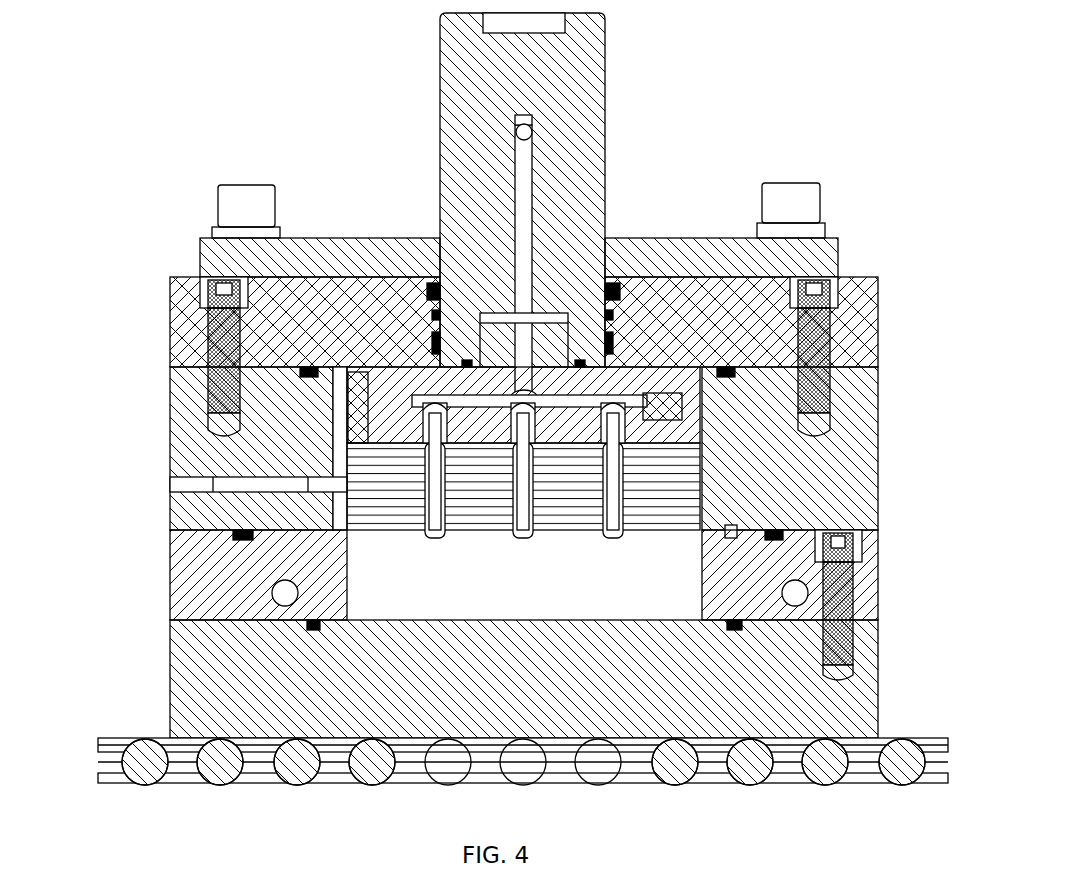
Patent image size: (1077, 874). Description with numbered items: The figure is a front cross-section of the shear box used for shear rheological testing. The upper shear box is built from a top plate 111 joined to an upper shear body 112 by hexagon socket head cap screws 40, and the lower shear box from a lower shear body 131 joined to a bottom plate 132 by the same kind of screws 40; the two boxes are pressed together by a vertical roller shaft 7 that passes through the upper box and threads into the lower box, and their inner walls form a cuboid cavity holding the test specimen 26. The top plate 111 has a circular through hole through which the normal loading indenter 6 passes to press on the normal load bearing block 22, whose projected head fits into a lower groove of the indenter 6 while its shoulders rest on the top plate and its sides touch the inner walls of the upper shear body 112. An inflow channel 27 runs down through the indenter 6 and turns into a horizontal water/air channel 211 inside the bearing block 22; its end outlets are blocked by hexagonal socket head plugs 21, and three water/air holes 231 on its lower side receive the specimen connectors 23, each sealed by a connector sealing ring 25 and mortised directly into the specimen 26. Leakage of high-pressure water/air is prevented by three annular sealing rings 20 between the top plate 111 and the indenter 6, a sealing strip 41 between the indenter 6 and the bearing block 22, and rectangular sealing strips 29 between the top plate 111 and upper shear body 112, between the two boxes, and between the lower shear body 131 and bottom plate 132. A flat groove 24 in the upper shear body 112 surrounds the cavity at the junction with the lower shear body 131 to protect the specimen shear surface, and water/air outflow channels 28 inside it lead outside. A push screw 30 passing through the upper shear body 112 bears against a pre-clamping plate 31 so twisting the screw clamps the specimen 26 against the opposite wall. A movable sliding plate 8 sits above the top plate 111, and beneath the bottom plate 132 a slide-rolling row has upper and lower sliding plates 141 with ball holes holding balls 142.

The normal loading indenter 6 is at (547, 67).
The vertical roller shaft 7 is at (795, 183).
The movable sliding plate 8 is at (838, 238).
The annular sealing rings 20 is at (612, 345).
The hexagonal socket head plugs 21 is at (747, 400).
The normal load bearing block 22 is at (662, 412).
The specimen connector 23 is at (600, 445).
The flat groove 24 is at (738, 532).
The connector sealing ring 25 is at (680, 525).
The test specimen 26 is at (853, 578).
The inflow channel 27 is at (515, 130).
The water/air outflow channels 28 is at (272, 585).
The rectangular sealing strips 29 is at (168, 482).
The push screw 30 is at (270, 484).
The pre-clamping plate 31 is at (250, 410).
The hexagon socket head cap screws 40 is at (235, 345).
The sealing strip 41 is at (463, 345).
The top plate 111 is at (820, 280).
The upper shear body 112 is at (338, 445).
The lower shear body 131 is at (217, 593).
The bottom plate 132 is at (270, 673).
The sliding plates 141 is at (117, 783).
The balls 142 is at (170, 735).
The horizontal water/air channel 211 is at (273, 232).
The water/air holes 231 is at (203, 272).